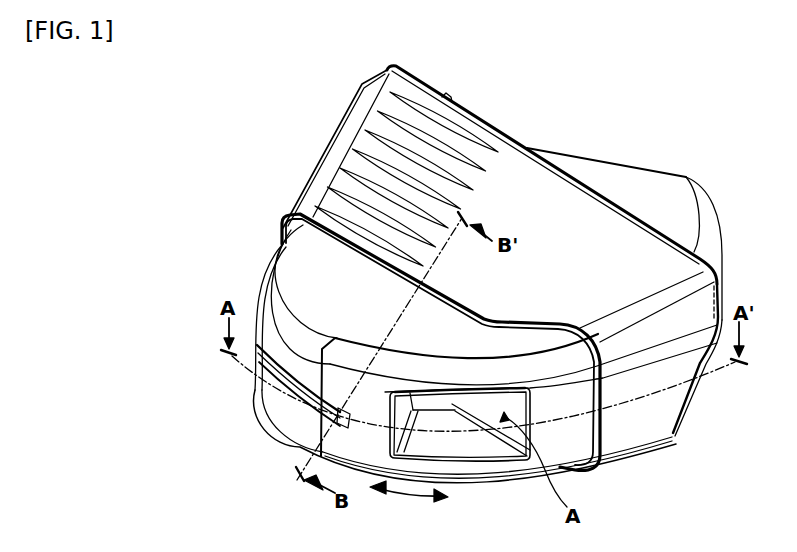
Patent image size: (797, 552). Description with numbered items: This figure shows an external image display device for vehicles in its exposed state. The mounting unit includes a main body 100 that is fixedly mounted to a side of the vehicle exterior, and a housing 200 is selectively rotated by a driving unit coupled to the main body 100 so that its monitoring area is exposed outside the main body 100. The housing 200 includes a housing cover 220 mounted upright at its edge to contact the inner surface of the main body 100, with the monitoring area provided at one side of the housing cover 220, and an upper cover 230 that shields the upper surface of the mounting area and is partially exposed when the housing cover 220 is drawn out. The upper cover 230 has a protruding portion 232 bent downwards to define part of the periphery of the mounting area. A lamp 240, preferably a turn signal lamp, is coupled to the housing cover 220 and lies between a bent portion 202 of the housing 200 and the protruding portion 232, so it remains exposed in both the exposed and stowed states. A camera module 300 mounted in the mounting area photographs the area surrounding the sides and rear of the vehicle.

The main body 100 is at (543, 182).
The housing 200 is at (318, 432).
The bent portion 202 is at (275, 407).
The housing cover 220 is at (577, 438).
The upper cover 230 is at (302, 256).
The protruding portion 232 is at (262, 329).
The lamp 240 is at (275, 388).
The camera module 300 is at (433, 403).